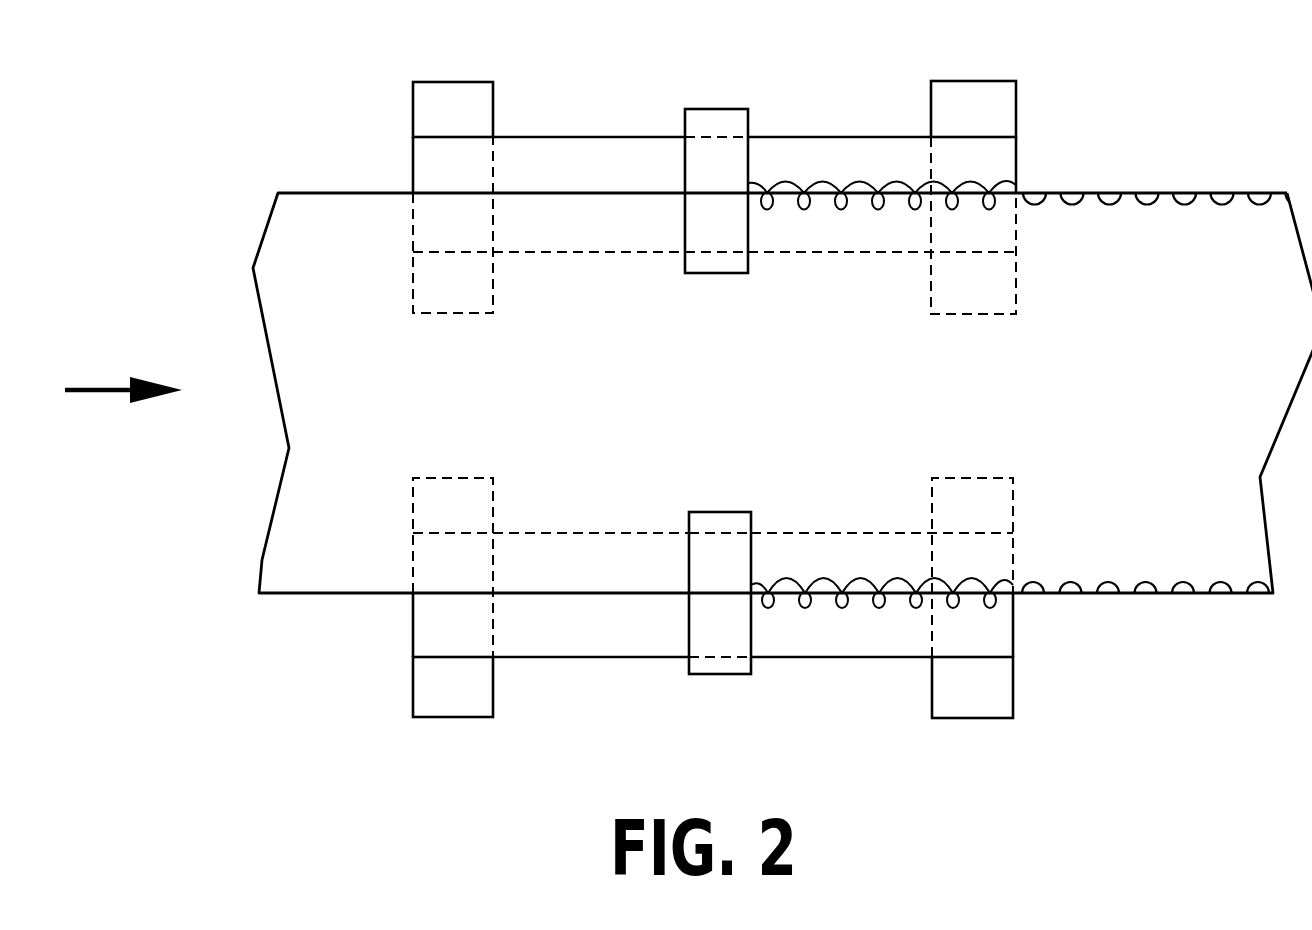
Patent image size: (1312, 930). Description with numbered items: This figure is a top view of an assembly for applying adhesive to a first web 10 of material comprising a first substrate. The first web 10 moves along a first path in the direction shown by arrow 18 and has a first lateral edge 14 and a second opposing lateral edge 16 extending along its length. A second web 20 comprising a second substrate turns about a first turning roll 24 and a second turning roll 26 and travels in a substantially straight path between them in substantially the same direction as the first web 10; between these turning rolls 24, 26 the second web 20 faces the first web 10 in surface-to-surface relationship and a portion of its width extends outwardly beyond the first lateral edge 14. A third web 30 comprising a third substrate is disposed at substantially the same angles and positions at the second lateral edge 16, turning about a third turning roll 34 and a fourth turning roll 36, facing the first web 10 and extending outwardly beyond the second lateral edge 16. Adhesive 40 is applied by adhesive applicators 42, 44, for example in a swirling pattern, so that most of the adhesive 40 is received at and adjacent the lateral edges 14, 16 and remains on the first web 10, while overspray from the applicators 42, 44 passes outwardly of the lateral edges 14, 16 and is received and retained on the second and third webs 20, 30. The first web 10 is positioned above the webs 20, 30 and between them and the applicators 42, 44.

The first web 10 is at (299, 603).
The first lateral edge 14 is at (1118, 193).
The second lateral edge 16 is at (1117, 593).
The arrow 18 is at (90, 390).
The second web 20 is at (597, 137).
The first turning roll 24 is at (447, 82).
The second turning roll 26 is at (978, 81).
The third web 30 is at (573, 657).
The third turning roll 34 is at (447, 717).
The fourth turning roll 36 is at (995, 718).
The adhesive 40 is at (868, 183).
The adhesive applicator 42 is at (715, 109).
The adhesive applicator 44 is at (718, 512).